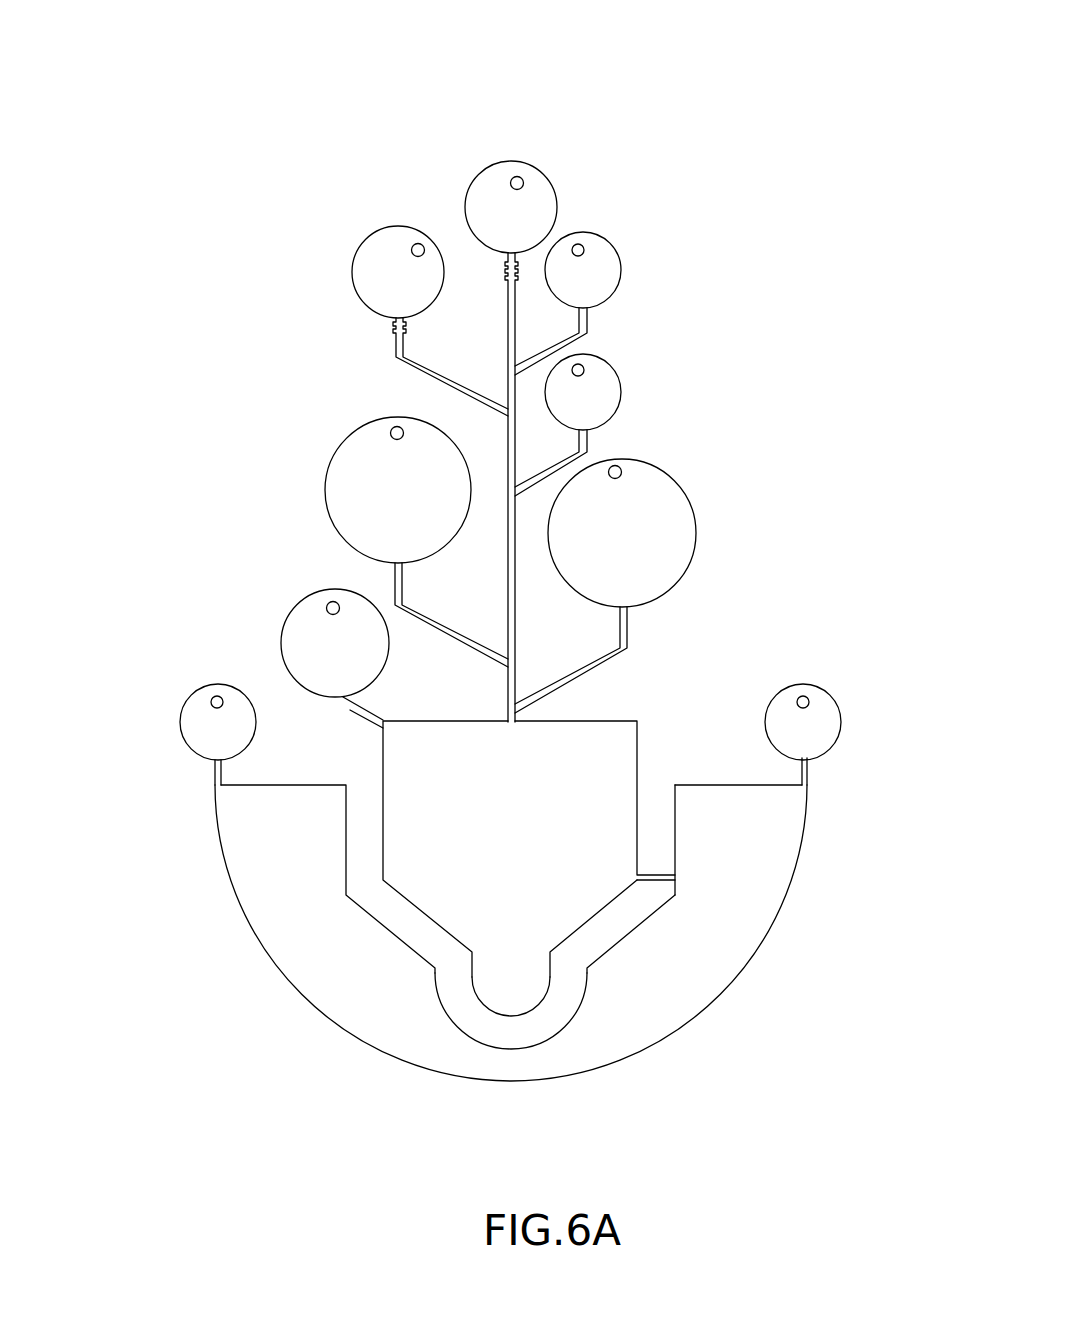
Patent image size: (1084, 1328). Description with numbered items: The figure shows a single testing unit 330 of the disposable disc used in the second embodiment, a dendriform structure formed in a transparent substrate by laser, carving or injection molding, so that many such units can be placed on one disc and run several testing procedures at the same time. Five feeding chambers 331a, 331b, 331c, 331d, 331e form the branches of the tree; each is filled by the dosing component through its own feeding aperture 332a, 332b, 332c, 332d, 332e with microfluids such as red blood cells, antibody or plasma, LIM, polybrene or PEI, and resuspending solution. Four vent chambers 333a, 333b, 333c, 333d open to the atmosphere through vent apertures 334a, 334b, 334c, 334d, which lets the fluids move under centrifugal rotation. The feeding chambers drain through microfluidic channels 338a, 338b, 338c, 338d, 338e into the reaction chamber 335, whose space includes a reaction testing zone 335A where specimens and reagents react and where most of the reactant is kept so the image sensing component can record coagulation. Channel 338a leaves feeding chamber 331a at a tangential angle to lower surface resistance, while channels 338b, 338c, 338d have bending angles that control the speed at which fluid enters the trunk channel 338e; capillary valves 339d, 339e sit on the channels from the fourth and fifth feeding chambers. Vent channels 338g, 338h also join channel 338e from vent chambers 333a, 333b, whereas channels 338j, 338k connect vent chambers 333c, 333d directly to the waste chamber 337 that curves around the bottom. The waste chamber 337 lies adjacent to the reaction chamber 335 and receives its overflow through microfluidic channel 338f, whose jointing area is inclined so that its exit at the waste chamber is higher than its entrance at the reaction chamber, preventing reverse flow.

The testing unit 330 is at (675, 60).
The feeding chamber 331a is at (253, 610).
The feeding chamber 331b is at (705, 533).
The feeding chamber 331c is at (349, 490).
The feeding chamber 331d is at (323, 250).
The feeding chamber 331e is at (453, 157).
The feeding aperture 332a is at (211, 540).
The feeding aperture 332b is at (729, 451).
The feeding aperture 332c is at (316, 403).
The feeding aperture 332d is at (355, 204).
The feeding aperture 332e is at (458, 101).
The vent chamber 333a is at (638, 270).
The vent chamber 333b is at (674, 380).
The vent chamber 333c is at (855, 707).
The vent chamber 333d is at (156, 722).
The vent aperture 334a is at (647, 219).
The vent aperture 334b is at (690, 333).
The vent aperture 334c is at (864, 657).
The vent aperture 334d is at (140, 679).
The reaction chamber 335 is at (597, 743).
The reaction testing zone 335A is at (591, 1051).
The waste chamber 337 is at (564, 933).
The microfluidic channel 338a is at (345, 550).
The microfluidic channel 338b is at (571, 660).
The microfluidic channel 338c is at (451, 615).
The microfluidic channel 338d is at (371, 355).
The microfluidic channel 338e is at (484, 487).
The microfluidic channel 338f is at (695, 765).
The microfluidic channel 338g is at (687, 311).
The microfluidic channel 338h is at (690, 433).
The microfluidic channel 338j is at (847, 767).
The microfluidic channel 338k is at (156, 775).
The capillary valve 339d is at (298, 292).
The capillary valve 339e is at (363, 192).